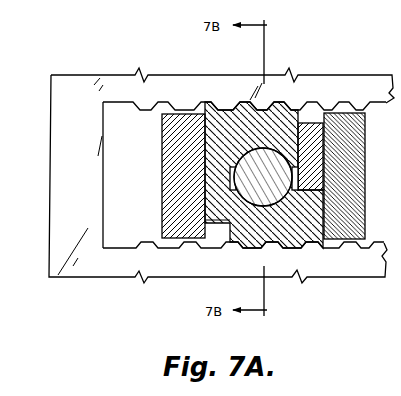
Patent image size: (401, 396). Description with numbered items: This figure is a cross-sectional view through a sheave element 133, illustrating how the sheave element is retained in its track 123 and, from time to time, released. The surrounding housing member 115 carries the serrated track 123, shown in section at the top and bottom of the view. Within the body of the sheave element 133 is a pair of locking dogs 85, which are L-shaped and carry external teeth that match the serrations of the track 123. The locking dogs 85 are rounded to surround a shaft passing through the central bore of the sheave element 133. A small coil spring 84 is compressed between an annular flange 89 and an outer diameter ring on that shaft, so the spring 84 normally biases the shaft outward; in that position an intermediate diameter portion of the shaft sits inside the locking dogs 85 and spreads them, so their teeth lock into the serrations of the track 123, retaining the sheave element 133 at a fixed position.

The housing 115 is at (73, 80).
The track 123 is at (288, 101).
The sheave element 133 is at (174, 120).
The locking dogs 85 is at (211, 100).
The annular flange 89 is at (400, 147).
The small coil spring 84 is at (400, 202).